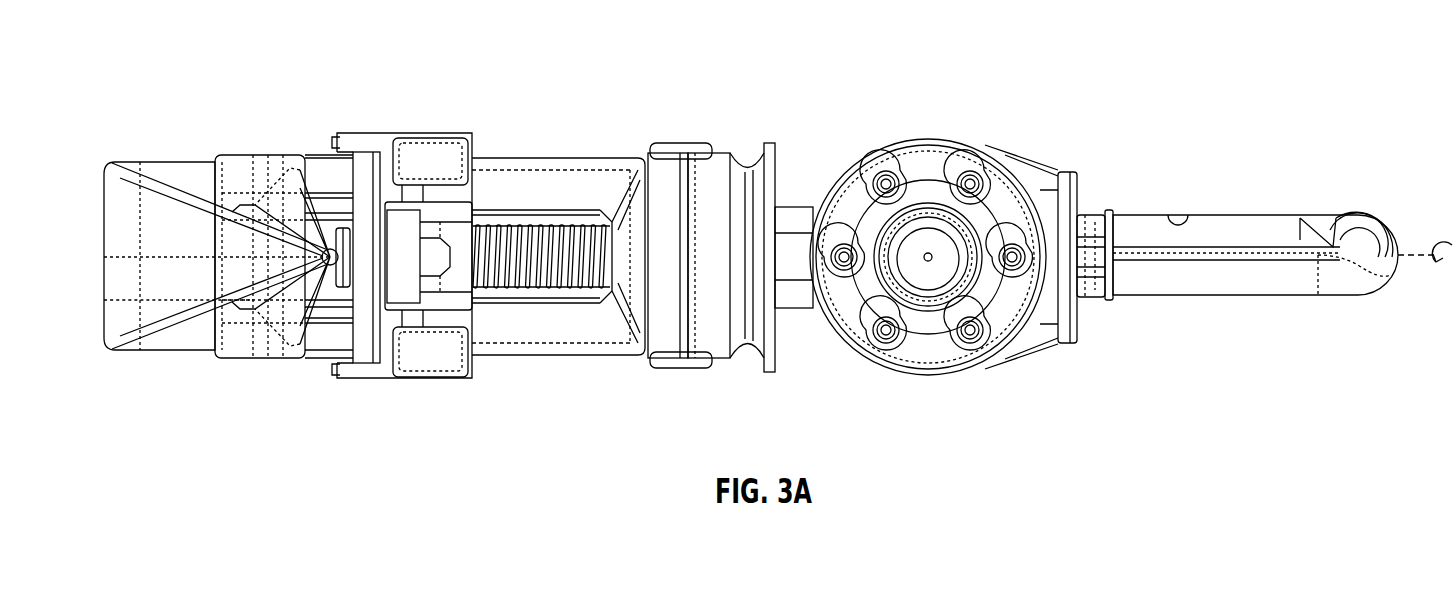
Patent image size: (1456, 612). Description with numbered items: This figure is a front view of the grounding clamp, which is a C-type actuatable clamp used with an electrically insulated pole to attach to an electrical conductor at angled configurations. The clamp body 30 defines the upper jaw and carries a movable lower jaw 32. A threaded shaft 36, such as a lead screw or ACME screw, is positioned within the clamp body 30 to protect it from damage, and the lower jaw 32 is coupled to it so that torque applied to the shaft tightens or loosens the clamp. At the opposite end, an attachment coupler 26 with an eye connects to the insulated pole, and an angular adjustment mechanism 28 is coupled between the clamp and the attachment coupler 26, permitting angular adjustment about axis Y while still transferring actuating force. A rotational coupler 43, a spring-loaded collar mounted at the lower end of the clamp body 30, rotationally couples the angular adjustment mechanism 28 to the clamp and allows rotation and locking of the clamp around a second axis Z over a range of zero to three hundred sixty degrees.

The attachment coupler 26 is at (1268, 297).
The angular adjustment mechanism 28 is at (921, 356).
The clamp body 30 is at (160, 212).
The movable lower jaw 32 is at (445, 152).
The threaded shaft 36 is at (557, 278).
The rotational coupler 43 is at (716, 160).
The axis Y is at (930, 254).
The second axis Z is at (1432, 264).